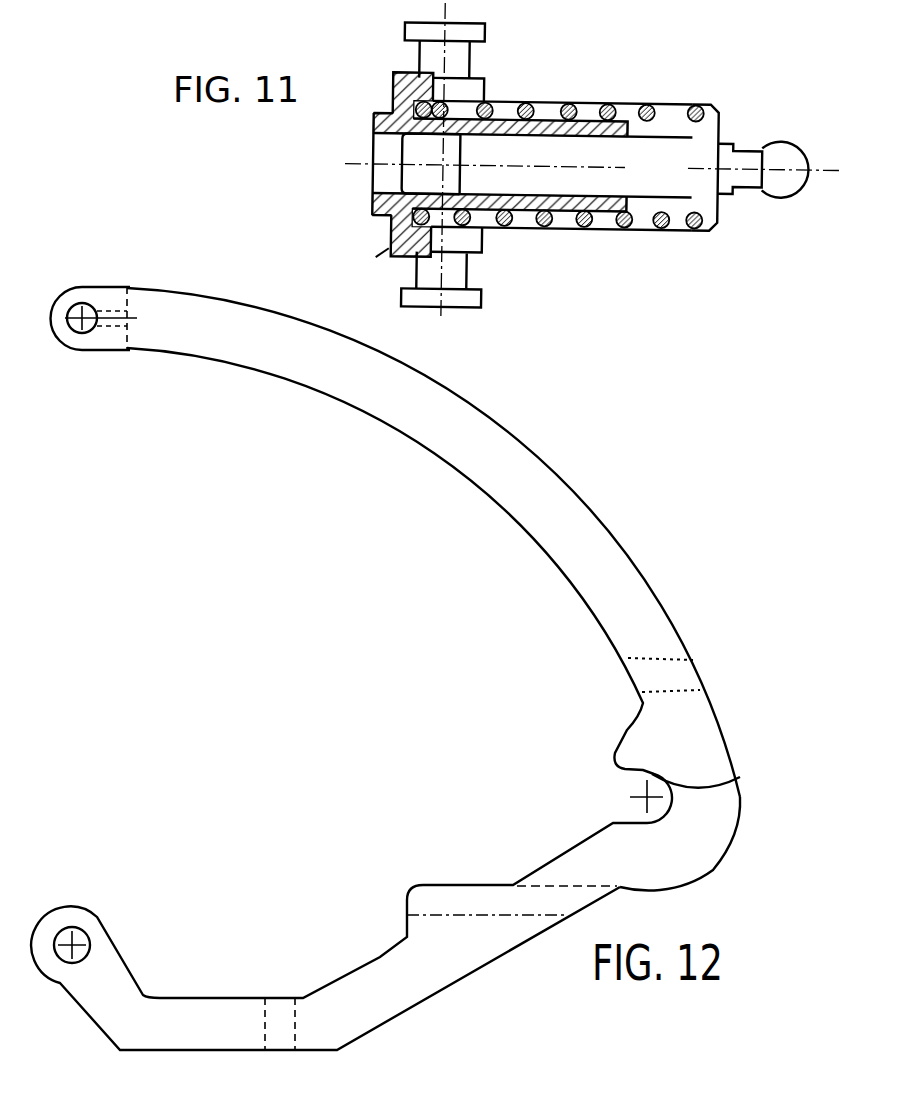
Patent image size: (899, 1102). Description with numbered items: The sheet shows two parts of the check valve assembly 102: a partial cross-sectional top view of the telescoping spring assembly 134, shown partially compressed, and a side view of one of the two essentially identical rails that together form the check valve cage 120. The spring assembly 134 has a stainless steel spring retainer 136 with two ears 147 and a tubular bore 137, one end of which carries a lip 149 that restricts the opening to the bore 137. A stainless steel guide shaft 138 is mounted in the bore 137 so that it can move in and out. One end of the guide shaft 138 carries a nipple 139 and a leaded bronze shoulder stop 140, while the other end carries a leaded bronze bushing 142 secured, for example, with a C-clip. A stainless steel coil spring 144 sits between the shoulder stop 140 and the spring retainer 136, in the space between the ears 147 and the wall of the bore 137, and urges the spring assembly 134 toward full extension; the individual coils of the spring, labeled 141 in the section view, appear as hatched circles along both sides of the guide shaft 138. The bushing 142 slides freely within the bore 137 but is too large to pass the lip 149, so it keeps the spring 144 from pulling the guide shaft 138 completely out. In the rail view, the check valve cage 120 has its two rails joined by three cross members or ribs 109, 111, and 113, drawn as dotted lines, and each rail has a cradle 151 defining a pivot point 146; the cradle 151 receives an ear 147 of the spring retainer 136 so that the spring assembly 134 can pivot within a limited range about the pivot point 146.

In FIG. 12, the check valve assembly 102 is at (582, 456).
In FIG. 12, the cross member 109 is at (278, 1017).
In FIG. 12, the cross member 111 is at (442, 900).
In FIG. 12, the cross member 113 is at (677, 680).
In FIG. 12, the check valve cage 120 is at (618, 603).
In FIG. 11, the telescoping spring assembly 134 is at (613, 282).
In FIG. 11, the spring retainer 136 is at (383, 183).
In FIG. 11, the tubular bore 137 is at (387, 147).
In FIG. 11, the guide shaft 138 is at (682, 181).
In FIG. 11, the nipple 139 is at (780, 155).
In FIG. 11, the shoulder stop 140 is at (715, 128).
In FIG. 11, the bearing balls 141 is at (487, 105).
In FIG. 11, the bushing 142 is at (398, 173).
In FIG. 11, the coil spring 144 is at (648, 103).
In FIG. 12, the pivot point 146 is at (638, 796).
In FIG. 11, the ear 147 is at (460, 50).
In FIG. 11, the lip 149 is at (678, 224).
In FIG. 12, the cradle 151 is at (738, 778).